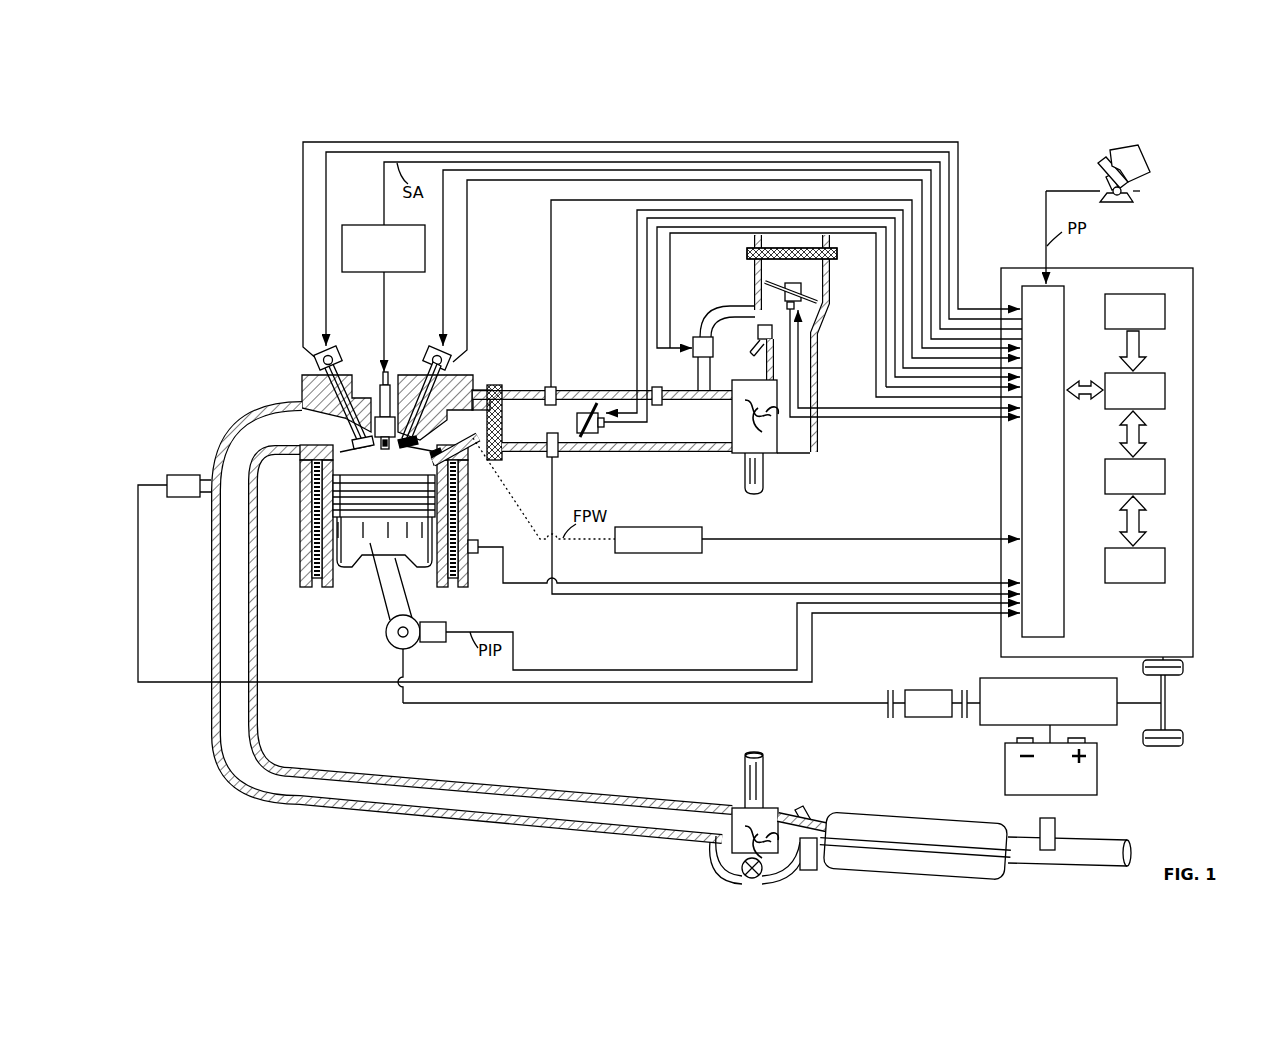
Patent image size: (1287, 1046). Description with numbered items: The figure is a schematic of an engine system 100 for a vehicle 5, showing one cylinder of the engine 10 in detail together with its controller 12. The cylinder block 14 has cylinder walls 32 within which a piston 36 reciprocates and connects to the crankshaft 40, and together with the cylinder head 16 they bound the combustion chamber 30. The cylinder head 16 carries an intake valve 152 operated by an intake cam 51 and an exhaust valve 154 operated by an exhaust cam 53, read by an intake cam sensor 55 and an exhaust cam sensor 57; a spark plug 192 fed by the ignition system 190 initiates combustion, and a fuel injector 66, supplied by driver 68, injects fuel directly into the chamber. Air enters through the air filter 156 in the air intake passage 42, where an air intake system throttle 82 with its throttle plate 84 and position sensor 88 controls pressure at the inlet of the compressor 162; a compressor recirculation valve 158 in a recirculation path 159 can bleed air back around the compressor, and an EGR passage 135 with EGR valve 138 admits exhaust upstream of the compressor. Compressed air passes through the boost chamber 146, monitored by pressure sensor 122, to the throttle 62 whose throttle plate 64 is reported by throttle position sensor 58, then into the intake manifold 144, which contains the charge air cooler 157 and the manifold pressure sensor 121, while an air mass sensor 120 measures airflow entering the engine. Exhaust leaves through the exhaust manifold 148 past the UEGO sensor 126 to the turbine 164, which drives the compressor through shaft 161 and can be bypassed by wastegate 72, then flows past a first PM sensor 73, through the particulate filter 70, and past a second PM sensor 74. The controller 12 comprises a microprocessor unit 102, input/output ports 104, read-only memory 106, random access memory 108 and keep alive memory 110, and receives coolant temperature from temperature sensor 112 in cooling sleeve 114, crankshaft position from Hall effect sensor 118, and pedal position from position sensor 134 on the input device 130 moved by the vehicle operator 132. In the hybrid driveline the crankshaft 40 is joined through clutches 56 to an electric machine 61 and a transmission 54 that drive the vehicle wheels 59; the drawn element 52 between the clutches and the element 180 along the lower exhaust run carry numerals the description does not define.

The engine system 100 is at (176, 190).
The engine 10 is at (240, 322).
The ignition system 190 is at (372, 226).
The exhaust cam 53 is at (334, 348).
The intake cam 51 is at (440, 348).
The spark plug 192 is at (391, 366).
The exhaust cam sensor 57 is at (322, 368).
The intake cam sensor 55 is at (457, 370).
The cylinder head 16 is at (488, 376).
The exhaust valves 154 is at (333, 425).
The exhaust manifold 148 is at (258, 436).
The intake valves 152 is at (449, 440).
The intake manifold 144 is at (514, 431).
The intake boost chamber 146 is at (649, 431).
The pressure sensor 121 is at (551, 386).
The throttle plate 64 is at (594, 411).
The throttle 62 is at (592, 400).
The pressure sensor 122 is at (658, 386).
The charge air cooler 157 is at (503, 458).
The air mass sensor 120 is at (556, 456).
The throttle position sensor 58 is at (598, 434).
The compressor recirculation valve 158 is at (697, 337).
The EGR valve 138 is at (757, 330).
The compressor recirculation path 159 is at (752, 345).
The EGR passage 135 is at (756, 358).
The throttle plate 84 is at (768, 284).
The air intake system throttle 82 is at (755, 295).
The position sensor 88 is at (757, 300).
The air intake passage 42 is at (782, 277).
The air filter 156 is at (837, 253).
The compressor 162 is at (777, 452).
The shaft 161 is at (765, 478).
The UEGO sensor 126 is at (167, 480).
The cylinder block 14 is at (293, 502).
The combustion chamber 30 is at (380, 462).
The cylinder walls 32 is at (326, 598).
The piston 36 is at (357, 588).
The crankshaft 40 is at (396, 646).
The Hall effect sensor 118 is at (440, 642).
The temperature sensor 112 is at (478, 541).
The cooling sleeve 114 is at (460, 580).
The driver 68 is at (684, 527).
The fuel injector 66 is at (465, 465).
The exhaust passage 180 is at (428, 833).
The clutches 56 is at (888, 693).
The motor/generator 52 is at (930, 718).
The transmission 54 is at (1100, 726).
The vehicle 5 is at (1206, 690).
The vehicle wheels 59 is at (1168, 746).
The electric machine 61 is at (1050, 795).
The second PM sensor 74 is at (1040, 822).
The first PM sensor 73 is at (816, 870).
The wastegate 72 is at (742, 875).
The emission control device 70 is at (968, 876).
The turbine 164 is at (735, 808).
The input device 130 is at (1100, 170).
The vehicle operator 132 is at (1150, 165).
The position sensor 134 is at (1140, 191).
The input/output ports 104 is at (1066, 292).
The controller 12 is at (1185, 270).
The read-only memory 106 is at (1167, 310).
The microprocessor unit 102 is at (1167, 391).
The random access memory 108 is at (1167, 476).
The keep alive memory 110 is at (1167, 561).